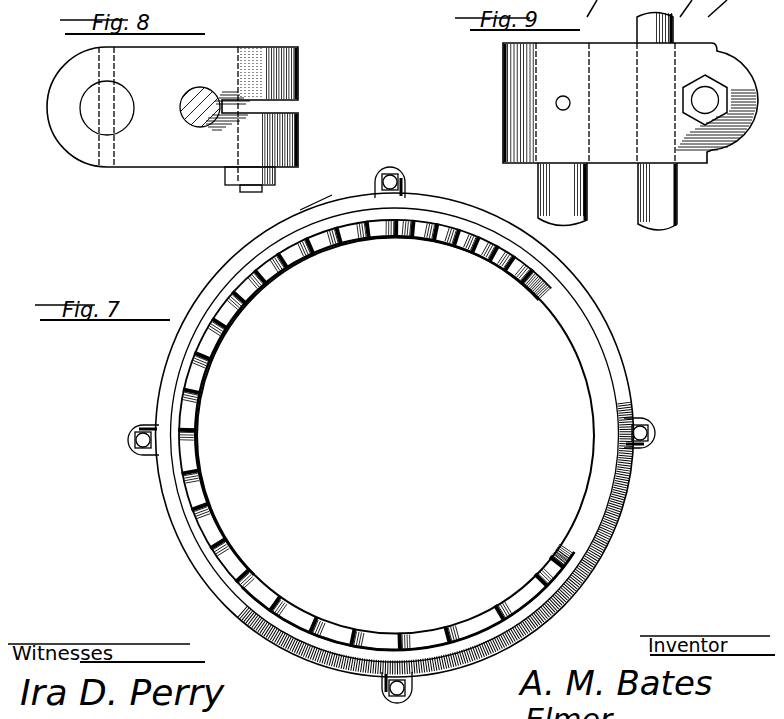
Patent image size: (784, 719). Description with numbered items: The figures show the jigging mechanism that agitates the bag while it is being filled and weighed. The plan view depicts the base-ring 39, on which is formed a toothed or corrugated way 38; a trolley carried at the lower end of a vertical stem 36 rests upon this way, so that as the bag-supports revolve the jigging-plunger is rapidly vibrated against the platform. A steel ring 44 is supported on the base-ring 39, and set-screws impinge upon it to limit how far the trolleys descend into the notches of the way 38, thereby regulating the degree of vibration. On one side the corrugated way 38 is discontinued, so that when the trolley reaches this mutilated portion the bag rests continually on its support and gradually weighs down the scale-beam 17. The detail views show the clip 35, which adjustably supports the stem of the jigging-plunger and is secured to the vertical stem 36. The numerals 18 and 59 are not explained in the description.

In FIG. 9, the scale-beam 17 is at (743, 8).
In FIG. 8, the rod 18 is at (361, 8).
In FIG. 9, the clip 35 is at (505, 86).
In FIG. 8, the vertical stem 36 is at (95, 118).
In FIG. 9, the vertical stem 36 is at (538, 190).
In FIG. 7, the toothed or corrugated way 38 is at (376, 232).
In FIG. 7, the base-ring 39 is at (485, 205).
In FIG. 7, the steel ring 44 is at (236, 288).
In FIG. 9, the rod 59 is at (619, 9).